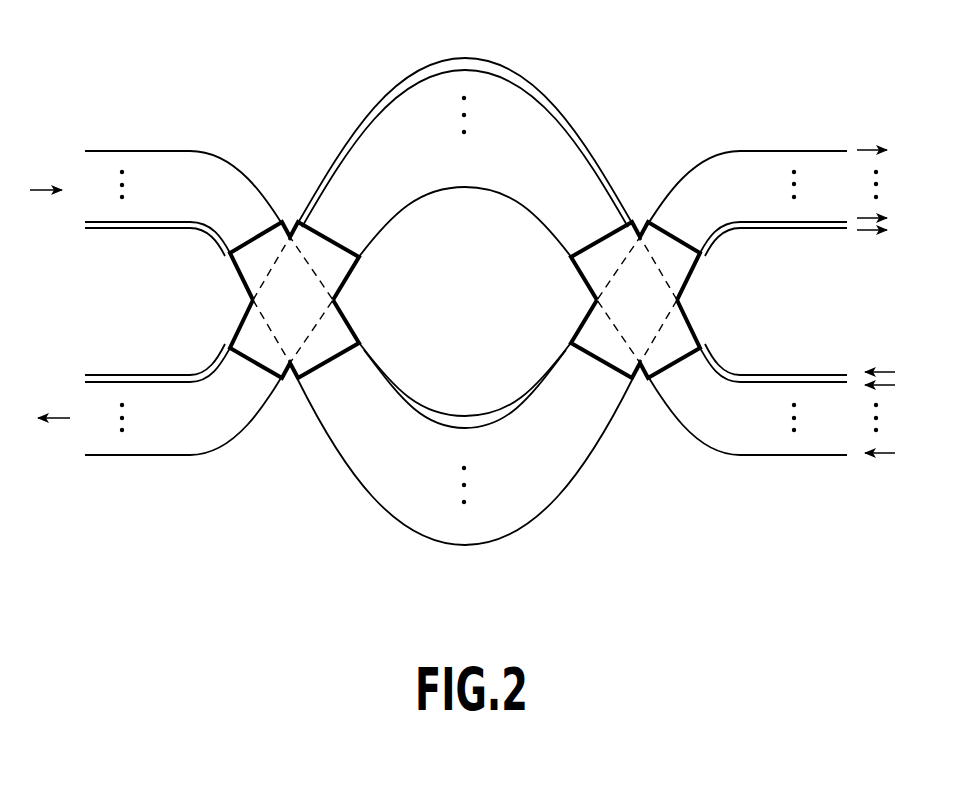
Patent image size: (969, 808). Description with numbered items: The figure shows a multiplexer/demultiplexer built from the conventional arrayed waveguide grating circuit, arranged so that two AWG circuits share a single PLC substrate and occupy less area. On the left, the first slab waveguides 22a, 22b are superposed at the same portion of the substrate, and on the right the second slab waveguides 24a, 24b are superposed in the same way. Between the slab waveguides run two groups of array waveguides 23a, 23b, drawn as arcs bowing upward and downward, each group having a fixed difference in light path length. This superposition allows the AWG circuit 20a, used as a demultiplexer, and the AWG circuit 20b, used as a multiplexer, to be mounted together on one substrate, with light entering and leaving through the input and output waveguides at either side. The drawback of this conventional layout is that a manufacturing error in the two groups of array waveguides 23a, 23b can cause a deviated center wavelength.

The AWG circuit used as a demultiplexer 20a is at (330, 522).
The AWG circuit used as a multiplexer 20b is at (332, 104).
The first slab waveguide 22a is at (237, 274).
The first slab waveguide 22b is at (242, 327).
The array waveguides 23a is at (531, 370).
The array waveguides 23b is at (530, 227).
The second slab waveguide 24a is at (700, 268).
The second slab waveguide 24b is at (698, 332).